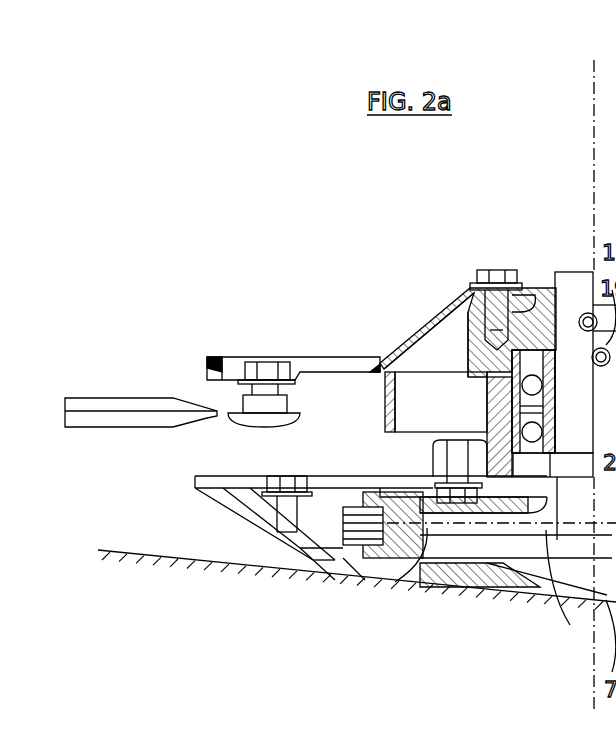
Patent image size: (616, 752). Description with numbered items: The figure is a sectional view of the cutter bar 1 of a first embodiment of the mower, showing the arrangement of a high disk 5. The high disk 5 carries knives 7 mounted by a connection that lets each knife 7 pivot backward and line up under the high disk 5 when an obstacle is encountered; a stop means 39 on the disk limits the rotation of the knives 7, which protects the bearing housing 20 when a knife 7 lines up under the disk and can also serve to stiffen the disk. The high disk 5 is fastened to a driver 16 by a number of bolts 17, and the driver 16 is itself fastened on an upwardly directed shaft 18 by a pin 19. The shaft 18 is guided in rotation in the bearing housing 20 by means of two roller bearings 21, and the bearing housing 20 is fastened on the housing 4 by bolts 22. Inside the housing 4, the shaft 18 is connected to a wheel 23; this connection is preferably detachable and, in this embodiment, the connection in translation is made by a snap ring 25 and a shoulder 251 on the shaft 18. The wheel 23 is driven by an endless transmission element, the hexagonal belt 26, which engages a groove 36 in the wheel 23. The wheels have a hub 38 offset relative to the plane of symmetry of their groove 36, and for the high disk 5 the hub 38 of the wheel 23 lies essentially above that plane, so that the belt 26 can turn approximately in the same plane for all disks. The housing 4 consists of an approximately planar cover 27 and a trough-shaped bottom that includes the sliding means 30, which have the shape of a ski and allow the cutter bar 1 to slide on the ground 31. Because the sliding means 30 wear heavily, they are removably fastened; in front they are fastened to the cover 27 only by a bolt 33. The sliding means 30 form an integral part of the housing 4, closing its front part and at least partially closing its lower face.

The cutter bar 1 is at (205, 238).
The housing 4 is at (537, 610).
The high disk 5 is at (430, 326).
The knife 7 is at (101, 413).
The driver 16 is at (545, 270).
The bolt 17 is at (497, 272).
The shaft 18 is at (562, 288).
The pin 19 is at (590, 314).
The bearing housing 20 is at (497, 393).
The roller bearing 21 is at (495, 428).
The bolt 22 is at (457, 458).
The wheel 23 is at (388, 568).
The snap ring 25 is at (553, 578).
The shoulder 251 is at (563, 464).
The hexagonal belt 26 is at (330, 568).
The cover 27 is at (352, 476).
The sliding means 30 is at (240, 514).
The ground 31 is at (181, 617).
The bolt 33 is at (285, 476).
The groove 36 is at (428, 568).
The hub 38 is at (542, 495).
The stop means 39 is at (383, 402).